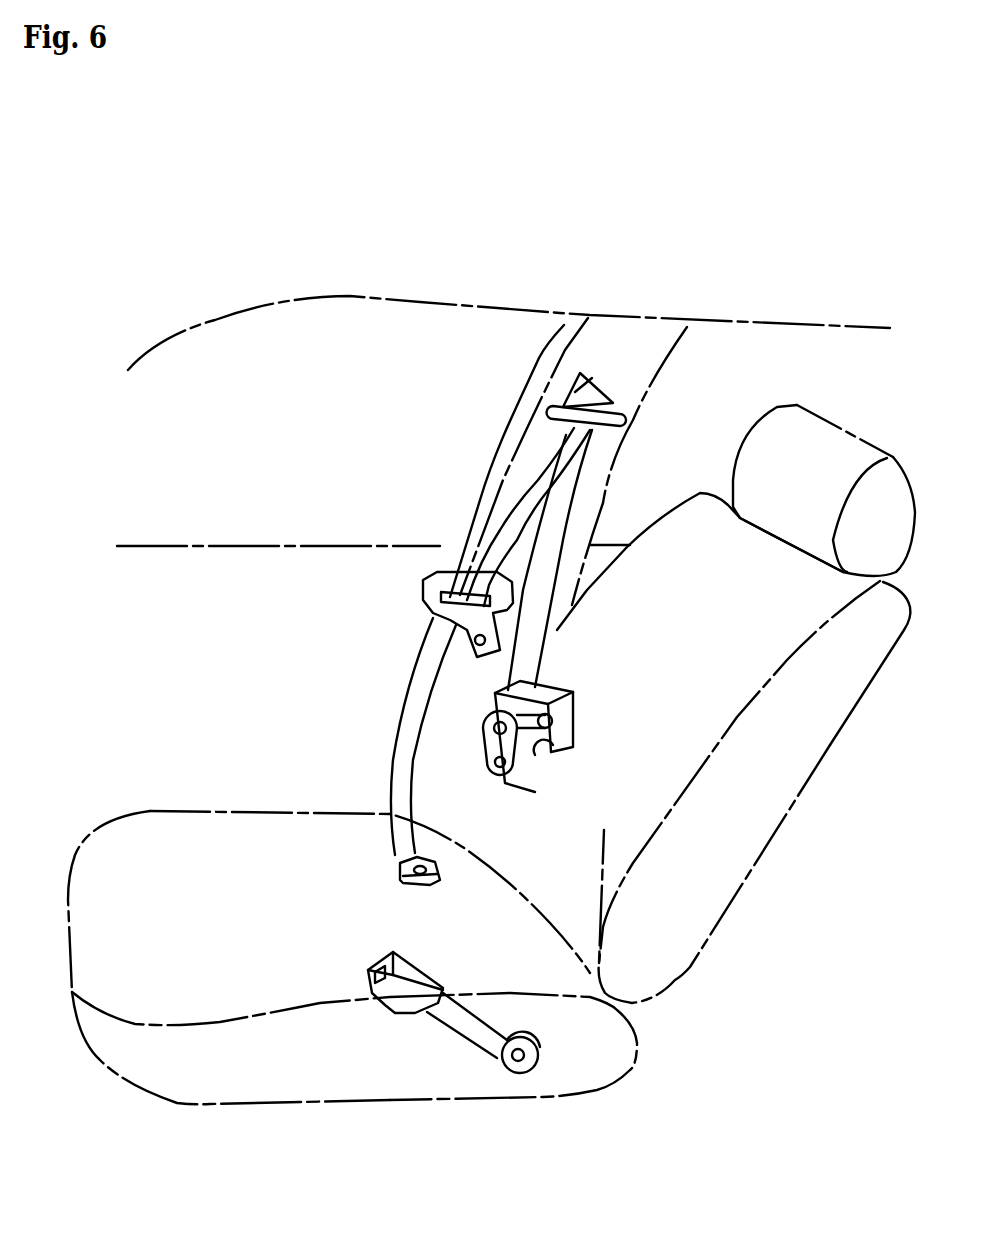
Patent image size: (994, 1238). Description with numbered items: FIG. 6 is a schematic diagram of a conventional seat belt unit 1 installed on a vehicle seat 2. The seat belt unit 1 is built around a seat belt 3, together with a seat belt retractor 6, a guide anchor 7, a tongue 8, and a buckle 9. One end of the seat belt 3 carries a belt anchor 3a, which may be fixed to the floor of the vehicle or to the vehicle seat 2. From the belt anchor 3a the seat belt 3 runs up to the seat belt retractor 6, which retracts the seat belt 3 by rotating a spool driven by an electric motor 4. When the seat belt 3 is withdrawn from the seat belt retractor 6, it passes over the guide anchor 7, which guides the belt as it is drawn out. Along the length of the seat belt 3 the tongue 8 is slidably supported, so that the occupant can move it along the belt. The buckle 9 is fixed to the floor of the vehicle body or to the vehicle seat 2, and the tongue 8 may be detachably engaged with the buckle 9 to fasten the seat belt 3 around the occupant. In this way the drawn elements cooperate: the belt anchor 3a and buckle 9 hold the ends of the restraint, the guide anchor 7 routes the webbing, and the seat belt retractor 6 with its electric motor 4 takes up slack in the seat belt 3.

The seat belt unit 1 is at (603, 831).
The vehicle seat 2 is at (225, 1080).
The seat belt 3 is at (527, 500).
The belt anchor 3a is at (422, 889).
The electric motor 4 is at (543, 757).
The seat belt retractor 6 is at (573, 728).
The guide anchor 7 is at (600, 397).
The tongue 8 is at (440, 607).
The buckle 9 is at (385, 995).